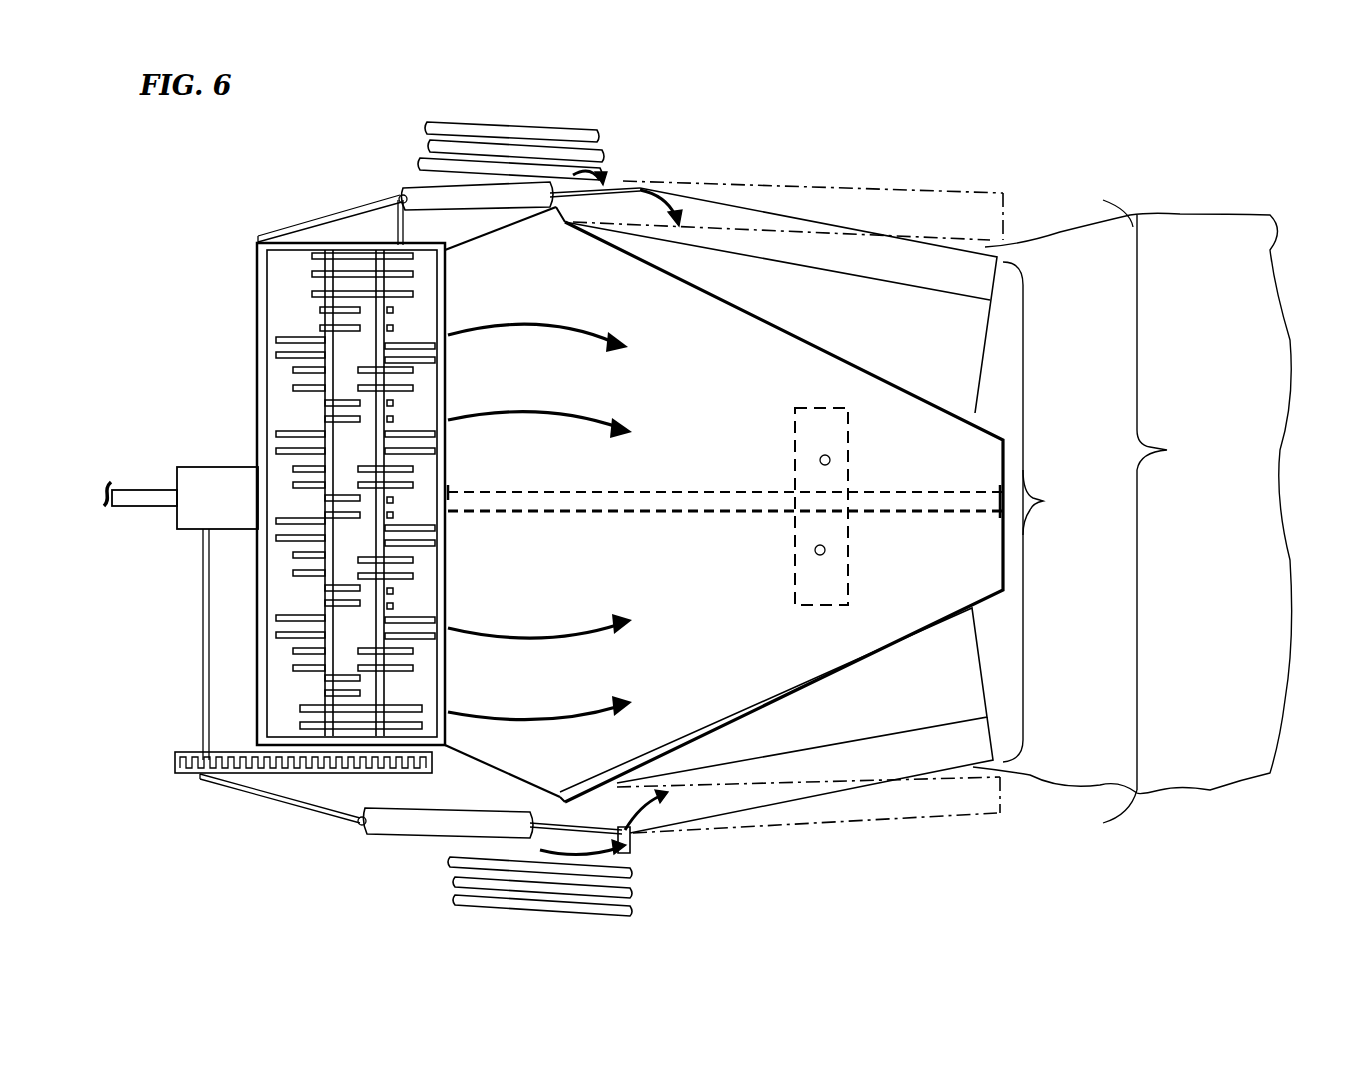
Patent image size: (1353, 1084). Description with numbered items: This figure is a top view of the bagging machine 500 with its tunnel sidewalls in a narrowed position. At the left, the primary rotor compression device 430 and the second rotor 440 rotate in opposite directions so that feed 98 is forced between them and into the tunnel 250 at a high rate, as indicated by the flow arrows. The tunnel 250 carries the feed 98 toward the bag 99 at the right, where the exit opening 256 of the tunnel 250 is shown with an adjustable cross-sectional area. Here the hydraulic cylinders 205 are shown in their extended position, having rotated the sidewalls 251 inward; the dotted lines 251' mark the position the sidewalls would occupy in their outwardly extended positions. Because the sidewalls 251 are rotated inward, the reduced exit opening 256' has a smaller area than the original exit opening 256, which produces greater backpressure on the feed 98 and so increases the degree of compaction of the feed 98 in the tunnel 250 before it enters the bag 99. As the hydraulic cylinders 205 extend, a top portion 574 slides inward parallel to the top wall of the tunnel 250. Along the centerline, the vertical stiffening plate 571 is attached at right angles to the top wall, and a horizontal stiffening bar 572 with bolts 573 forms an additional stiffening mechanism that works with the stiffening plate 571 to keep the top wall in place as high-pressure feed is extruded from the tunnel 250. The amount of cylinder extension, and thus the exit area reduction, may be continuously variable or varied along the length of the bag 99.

The bagging machine 500 is at (1138, 140).
The bag 99 is at (1212, 212).
The feed 98 is at (600, 718).
The hydraulic cylinders 205 is at (367, 834).
The tunnel 250 is at (692, 850).
The sidewalls 251 is at (810, 509).
The outwardly extended sidewall position 251' is at (810, 541).
The exit opening 256 is at (1172, 502).
The reduced exit opening 256' is at (1056, 502).
The primary rotor compression device 430 is at (345, 312).
The second rotor 440 is at (370, 420).
The vertical stiffening plate 571 is at (753, 492).
The horizontal stiffening bar 572 is at (848, 436).
The bolts 573 is at (830, 460).
The top portion 574 is at (695, 490).